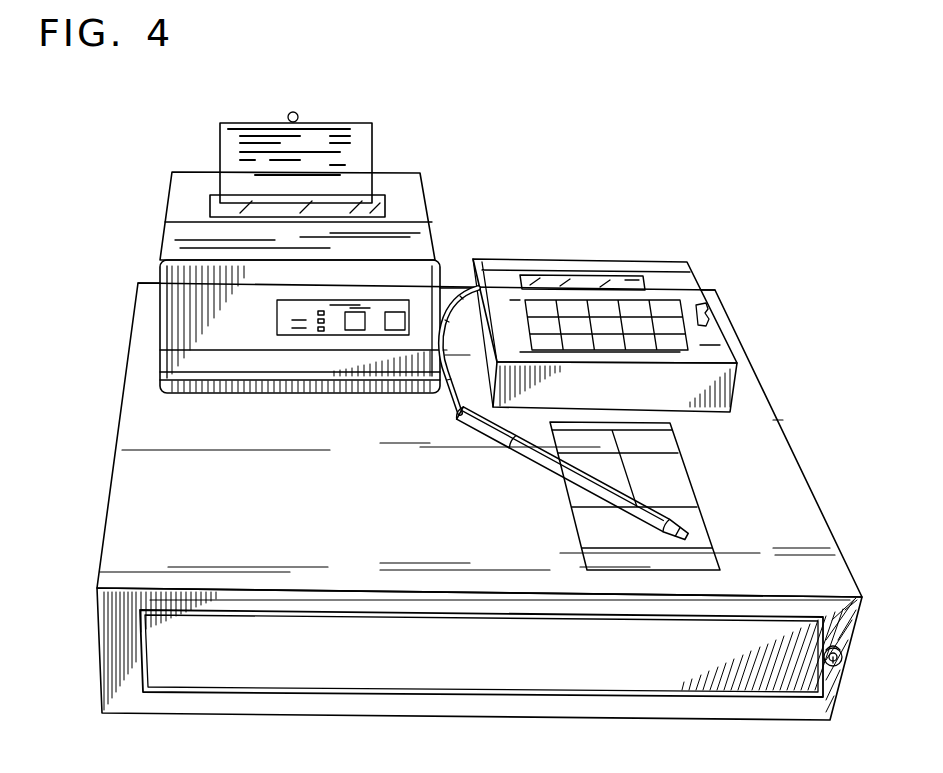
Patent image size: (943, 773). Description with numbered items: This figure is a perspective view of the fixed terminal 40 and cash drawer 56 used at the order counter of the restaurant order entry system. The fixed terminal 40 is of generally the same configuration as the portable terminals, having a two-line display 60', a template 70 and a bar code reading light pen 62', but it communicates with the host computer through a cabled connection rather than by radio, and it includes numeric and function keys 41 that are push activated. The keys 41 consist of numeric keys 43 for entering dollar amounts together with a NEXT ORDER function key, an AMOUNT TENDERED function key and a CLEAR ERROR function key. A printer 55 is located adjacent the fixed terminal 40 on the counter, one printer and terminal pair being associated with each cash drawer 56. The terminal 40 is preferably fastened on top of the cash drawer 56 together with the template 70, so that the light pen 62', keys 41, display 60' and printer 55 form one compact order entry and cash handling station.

The fixed terminal 40 is at (696, 282).
The numeric and function keys 41 is at (525, 300).
The numeric keys 43 is at (513, 325).
The printer 55 is at (424, 180).
The cash drawer 56 is at (126, 507).
The display 60' is at (588, 251).
The bar code reading light pen 62' is at (571, 474).
The template 70 is at (690, 487).